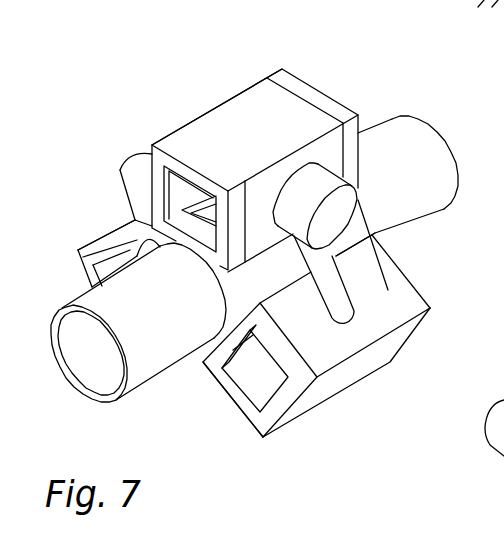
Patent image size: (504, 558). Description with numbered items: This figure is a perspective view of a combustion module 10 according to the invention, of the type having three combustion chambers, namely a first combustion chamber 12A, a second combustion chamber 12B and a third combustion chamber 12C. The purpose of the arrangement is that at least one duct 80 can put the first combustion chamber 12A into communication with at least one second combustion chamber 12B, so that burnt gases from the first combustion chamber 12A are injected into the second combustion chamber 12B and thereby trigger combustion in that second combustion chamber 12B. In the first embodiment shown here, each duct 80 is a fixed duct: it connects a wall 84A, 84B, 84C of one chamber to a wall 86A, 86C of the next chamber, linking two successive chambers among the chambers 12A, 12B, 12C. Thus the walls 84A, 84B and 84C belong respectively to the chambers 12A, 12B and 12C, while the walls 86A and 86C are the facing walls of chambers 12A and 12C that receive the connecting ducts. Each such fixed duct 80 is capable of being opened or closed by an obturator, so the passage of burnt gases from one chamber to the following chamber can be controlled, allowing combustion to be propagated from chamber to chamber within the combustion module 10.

The combustion module 10 is at (334, 71).
The first combustion chamber 12A is at (232, 118).
The second combustion chamber 12B is at (337, 380).
The combustion chamber 12C is at (113, 238).
The duct 80 is at (331, 287).
The wall 84A is at (311, 138).
The wall 84B is at (233, 404).
The wall 84C is at (125, 235).
The wall 86A is at (374, 315).
The wall 86C is at (197, 115).